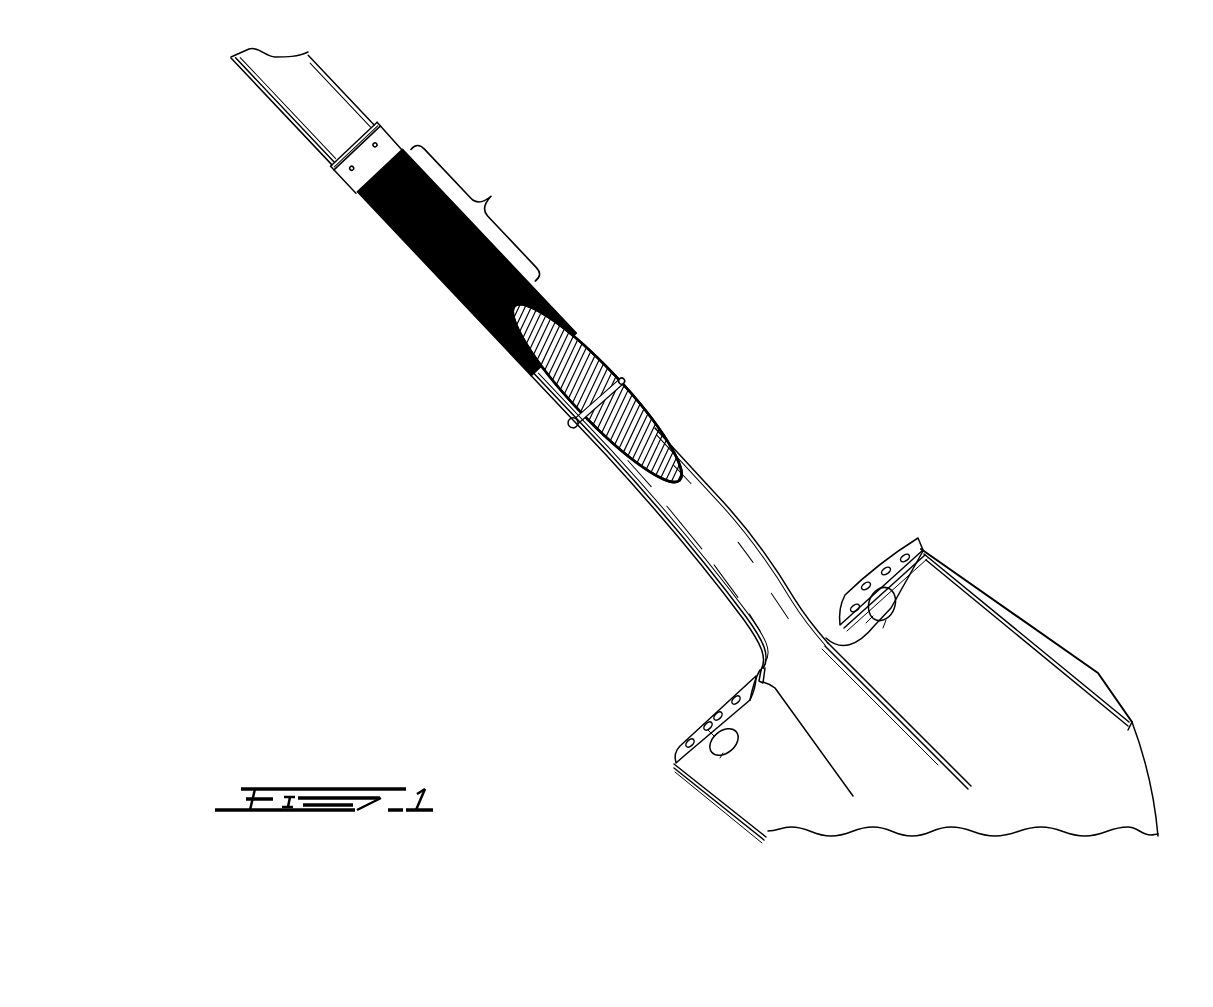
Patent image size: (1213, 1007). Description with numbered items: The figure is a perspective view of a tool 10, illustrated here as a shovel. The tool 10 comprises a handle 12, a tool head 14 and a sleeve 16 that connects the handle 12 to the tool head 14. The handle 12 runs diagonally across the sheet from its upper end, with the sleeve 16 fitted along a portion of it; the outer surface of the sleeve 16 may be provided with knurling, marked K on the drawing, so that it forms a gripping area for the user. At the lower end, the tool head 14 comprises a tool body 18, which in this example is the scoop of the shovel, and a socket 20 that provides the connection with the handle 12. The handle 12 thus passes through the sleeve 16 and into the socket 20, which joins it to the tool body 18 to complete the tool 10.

The tool 10 is at (345, 492).
The handle 12 is at (257, 78).
The tool head 14 is at (1008, 597).
The sleeve 16 is at (382, 222).
The tool body 18 is at (1098, 675).
The socket 20 is at (727, 534).